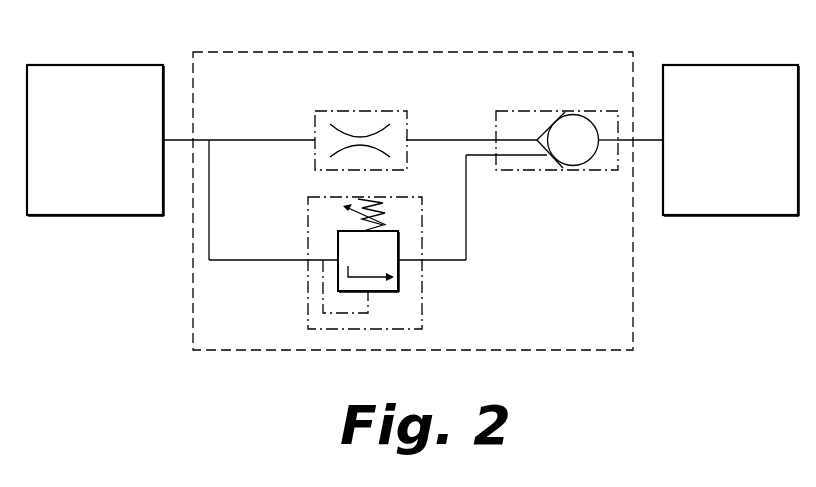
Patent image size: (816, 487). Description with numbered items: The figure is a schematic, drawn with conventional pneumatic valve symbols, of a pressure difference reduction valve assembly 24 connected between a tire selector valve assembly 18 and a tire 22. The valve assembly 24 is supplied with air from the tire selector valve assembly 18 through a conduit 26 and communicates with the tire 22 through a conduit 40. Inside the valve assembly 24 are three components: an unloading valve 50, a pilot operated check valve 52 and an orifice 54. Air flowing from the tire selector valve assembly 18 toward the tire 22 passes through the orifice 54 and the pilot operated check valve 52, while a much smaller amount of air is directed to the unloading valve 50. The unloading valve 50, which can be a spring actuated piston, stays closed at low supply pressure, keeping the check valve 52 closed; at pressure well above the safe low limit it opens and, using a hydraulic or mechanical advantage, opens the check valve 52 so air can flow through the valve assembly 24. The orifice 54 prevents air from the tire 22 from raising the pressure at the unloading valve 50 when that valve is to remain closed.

The tire selector valve assembly 18 is at (110, 65).
The tire 22 is at (732, 65).
The pressure difference reduction valve assembly 24 is at (454, 50).
The conduit 26 is at (178, 138).
The conduit 40 is at (650, 137).
The unloading valve 50 is at (308, 305).
The pilot operated check valve 52 is at (533, 172).
The orifice 54 is at (359, 109).